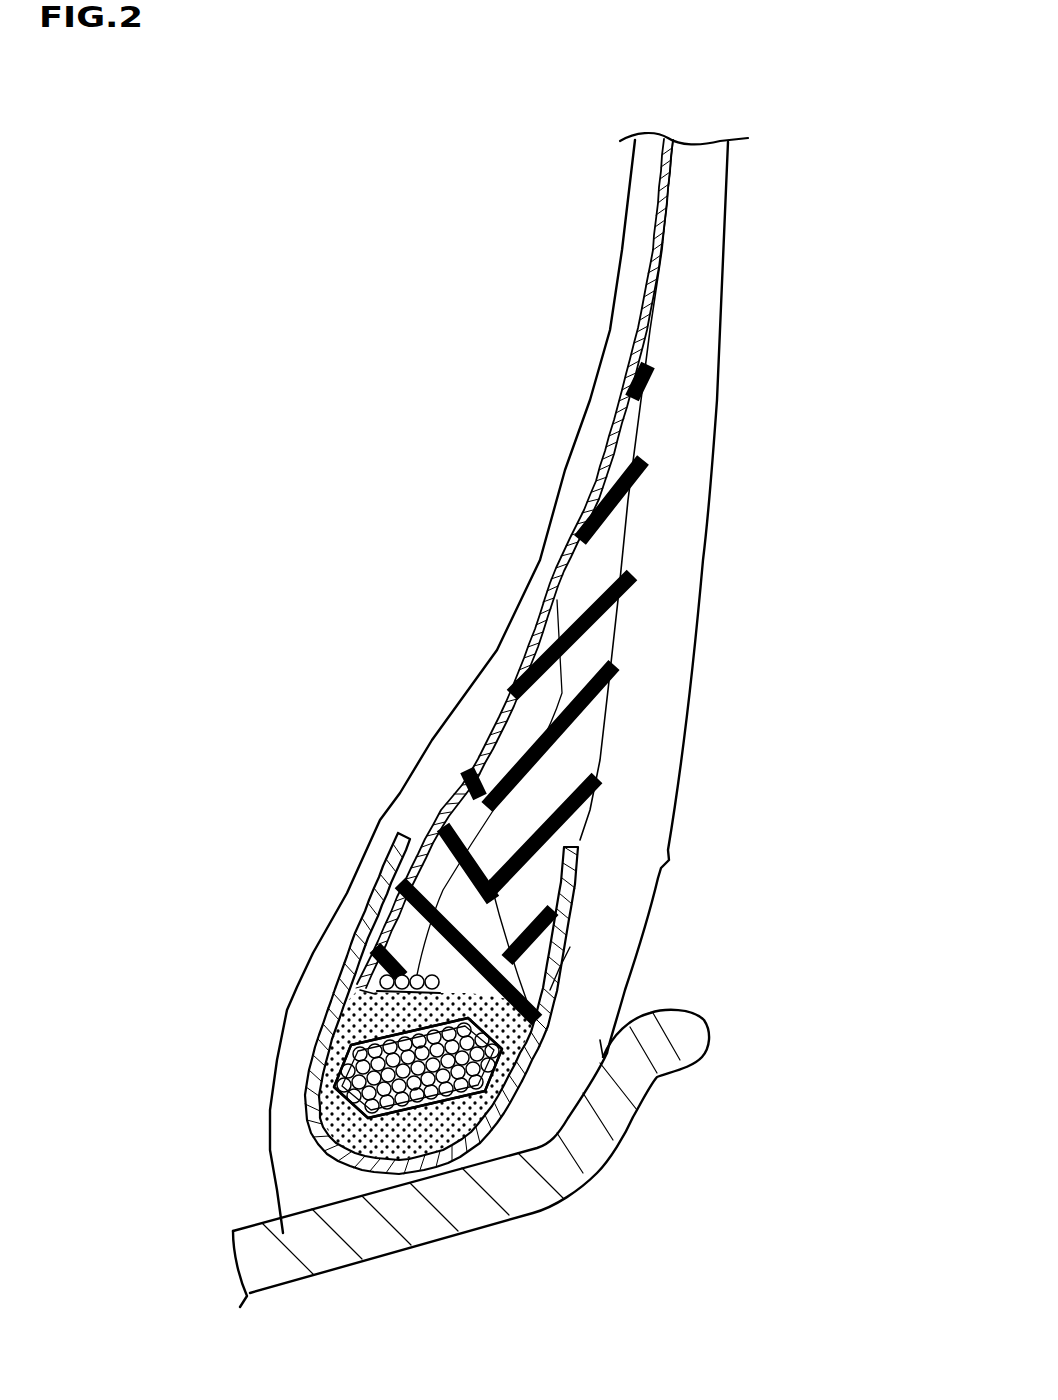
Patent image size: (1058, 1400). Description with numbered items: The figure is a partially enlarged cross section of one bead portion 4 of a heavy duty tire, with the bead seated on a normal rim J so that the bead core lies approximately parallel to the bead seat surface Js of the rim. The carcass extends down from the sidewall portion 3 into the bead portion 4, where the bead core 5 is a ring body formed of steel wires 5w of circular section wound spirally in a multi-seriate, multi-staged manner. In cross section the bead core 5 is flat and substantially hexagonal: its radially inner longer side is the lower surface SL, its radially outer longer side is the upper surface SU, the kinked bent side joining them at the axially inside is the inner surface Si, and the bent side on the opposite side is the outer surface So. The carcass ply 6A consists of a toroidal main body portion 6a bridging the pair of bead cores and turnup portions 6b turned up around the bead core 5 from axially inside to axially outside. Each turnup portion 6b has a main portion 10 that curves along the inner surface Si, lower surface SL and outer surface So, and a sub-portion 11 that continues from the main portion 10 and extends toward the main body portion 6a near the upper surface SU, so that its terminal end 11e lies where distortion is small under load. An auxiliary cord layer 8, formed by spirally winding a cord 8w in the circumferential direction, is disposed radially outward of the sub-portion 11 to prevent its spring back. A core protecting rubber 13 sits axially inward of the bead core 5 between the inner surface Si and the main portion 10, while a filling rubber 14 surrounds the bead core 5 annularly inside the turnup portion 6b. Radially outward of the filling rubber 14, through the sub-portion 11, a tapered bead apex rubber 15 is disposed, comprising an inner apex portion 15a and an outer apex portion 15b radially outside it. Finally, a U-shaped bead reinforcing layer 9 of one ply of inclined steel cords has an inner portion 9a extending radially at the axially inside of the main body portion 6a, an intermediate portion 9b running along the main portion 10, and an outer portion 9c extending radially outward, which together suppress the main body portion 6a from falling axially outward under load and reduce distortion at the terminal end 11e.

The sidewall portion 3 is at (759, 264).
The bead portion 4 is at (674, 951).
The bead core 5 is at (470, 1325).
The steel wire 5w is at (432, 1110).
The carcass ply 6A is at (838, 592).
The main body portion 6a is at (575, 548).
The turnup portion 6b is at (788, 697).
The auxiliary cord layer 8 is at (320, 748).
The cord 8w is at (405, 973).
The bead reinforcing layer 9 is at (291, 1134).
The inner portion 9a is at (317, 1010).
The intermediate portion 9b is at (545, 1162).
The outer portion 9c is at (570, 960).
The main portion 10 is at (570, 947).
The sub-portion 11 is at (490, 880).
The terminal end 11e is at (368, 993).
The core protecting rubber 13 is at (335, 1044).
The filling rubber 14 is at (417, 1002).
The bead apex rubber 15 is at (446, 332).
The inner apex portion 15a is at (552, 590).
The outer apex portion 15b is at (632, 445).
The upper surface SU is at (356, 1040).
The lower surface SL is at (472, 1105).
The inner surface Si is at (325, 1052).
The outer surface So is at (520, 1052).
The normal rim J is at (603, 1205).
The bead seat surface Js is at (320, 1210).